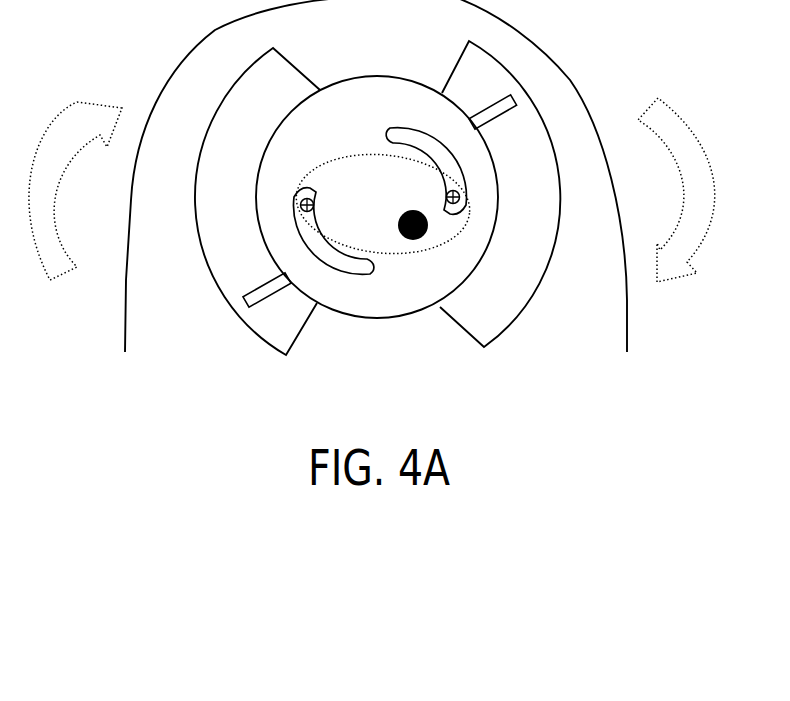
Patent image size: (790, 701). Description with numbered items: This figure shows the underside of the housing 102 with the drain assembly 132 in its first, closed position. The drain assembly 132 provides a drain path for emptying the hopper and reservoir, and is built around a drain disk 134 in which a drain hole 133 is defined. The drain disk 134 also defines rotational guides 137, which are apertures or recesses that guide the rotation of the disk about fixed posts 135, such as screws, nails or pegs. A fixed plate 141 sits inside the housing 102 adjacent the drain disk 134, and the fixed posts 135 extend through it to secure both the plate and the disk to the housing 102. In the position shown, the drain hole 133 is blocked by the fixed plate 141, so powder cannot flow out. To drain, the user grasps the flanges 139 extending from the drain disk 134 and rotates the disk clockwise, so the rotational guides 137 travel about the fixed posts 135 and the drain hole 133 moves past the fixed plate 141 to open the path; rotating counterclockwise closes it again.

The housing 102 is at (188, 55).
The drain assembly 132 is at (178, 249).
The drain hole 133 is at (403, 213).
The drain disk 134 is at (351, 79).
The fixed posts 135 is at (302, 200).
The rotational guides 137 is at (390, 130).
The flanges 139 is at (478, 110).
The fixed plate 141 is at (350, 157).